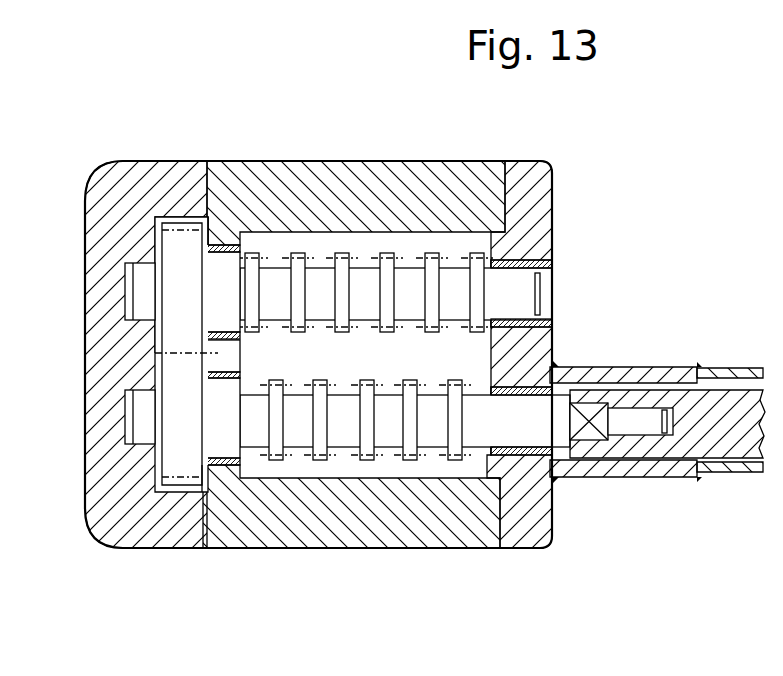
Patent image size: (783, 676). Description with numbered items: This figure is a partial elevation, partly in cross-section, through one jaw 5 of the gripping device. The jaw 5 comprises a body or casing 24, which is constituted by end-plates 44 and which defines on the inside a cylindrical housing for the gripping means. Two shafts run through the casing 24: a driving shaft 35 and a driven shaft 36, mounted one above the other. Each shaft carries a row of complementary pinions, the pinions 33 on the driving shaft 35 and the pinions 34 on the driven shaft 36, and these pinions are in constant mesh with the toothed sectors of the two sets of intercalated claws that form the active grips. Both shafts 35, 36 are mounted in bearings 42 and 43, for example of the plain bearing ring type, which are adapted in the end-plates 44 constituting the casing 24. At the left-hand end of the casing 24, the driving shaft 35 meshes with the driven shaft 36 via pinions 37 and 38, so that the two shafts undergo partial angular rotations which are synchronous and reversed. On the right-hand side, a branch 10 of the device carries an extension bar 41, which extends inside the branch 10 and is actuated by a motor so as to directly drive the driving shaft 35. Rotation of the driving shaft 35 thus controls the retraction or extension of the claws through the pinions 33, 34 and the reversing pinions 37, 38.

The jaw 5 is at (402, 341).
The branch 10 is at (657, 386).
The body or casing 24 is at (335, 152).
The pinion 33 is at (318, 460).
The pinion 34 is at (248, 252).
The driving shaft 35 is at (392, 437).
The driven shaft 36 is at (364, 272).
The pinion 37 is at (165, 462).
The pinion 38 is at (175, 258).
The extension bar 41 is at (723, 413).
The bearing 42 is at (223, 463).
The bearing 43 is at (218, 243).
The end-plate 44 is at (138, 175).